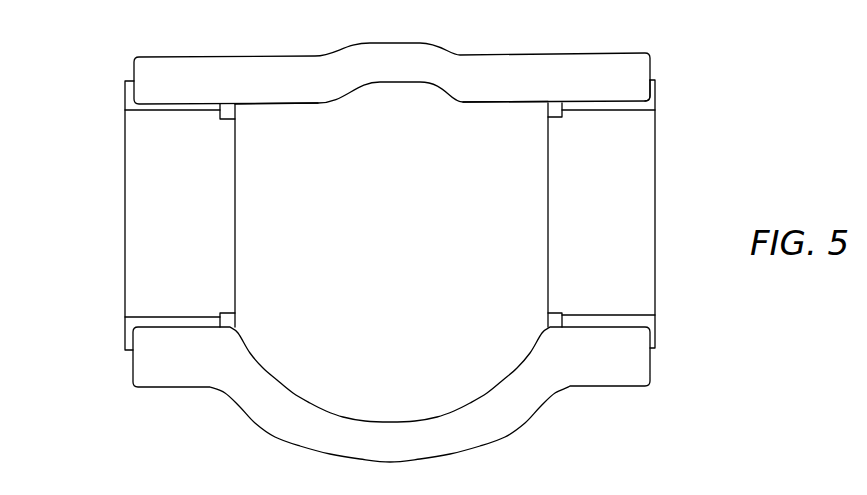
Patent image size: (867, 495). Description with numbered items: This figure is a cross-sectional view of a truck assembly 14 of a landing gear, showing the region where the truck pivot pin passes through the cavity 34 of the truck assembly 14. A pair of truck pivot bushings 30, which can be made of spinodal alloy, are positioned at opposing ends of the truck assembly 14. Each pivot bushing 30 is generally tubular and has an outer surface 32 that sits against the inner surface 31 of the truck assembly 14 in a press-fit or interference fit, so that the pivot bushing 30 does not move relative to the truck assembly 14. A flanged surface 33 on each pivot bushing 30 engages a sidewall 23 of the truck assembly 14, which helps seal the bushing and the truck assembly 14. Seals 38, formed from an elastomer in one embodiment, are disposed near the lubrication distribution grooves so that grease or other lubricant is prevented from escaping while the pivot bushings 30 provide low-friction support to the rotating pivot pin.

The truck assembly 14 is at (518, 427).
The sidewall 23 is at (650, 53).
The truck pivot bushing 30 is at (660, 137).
The inner surface 31 is at (268, 105).
The outer surface 32 is at (580, 100).
The flanged surface 33 is at (648, 98).
The cavity 34 is at (98, 202).
The seal 38 is at (234, 315).